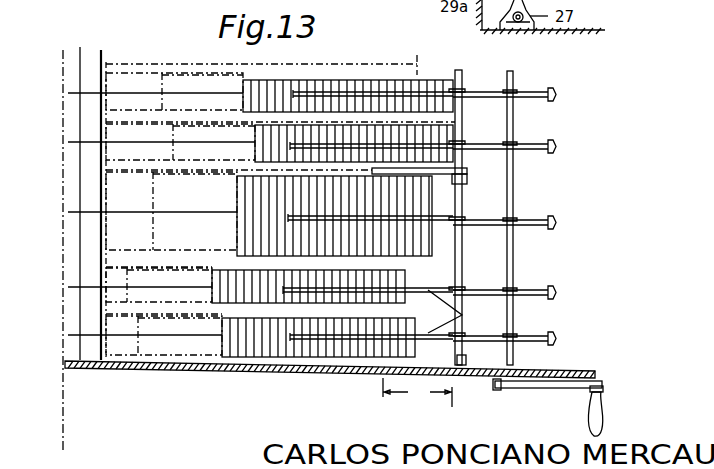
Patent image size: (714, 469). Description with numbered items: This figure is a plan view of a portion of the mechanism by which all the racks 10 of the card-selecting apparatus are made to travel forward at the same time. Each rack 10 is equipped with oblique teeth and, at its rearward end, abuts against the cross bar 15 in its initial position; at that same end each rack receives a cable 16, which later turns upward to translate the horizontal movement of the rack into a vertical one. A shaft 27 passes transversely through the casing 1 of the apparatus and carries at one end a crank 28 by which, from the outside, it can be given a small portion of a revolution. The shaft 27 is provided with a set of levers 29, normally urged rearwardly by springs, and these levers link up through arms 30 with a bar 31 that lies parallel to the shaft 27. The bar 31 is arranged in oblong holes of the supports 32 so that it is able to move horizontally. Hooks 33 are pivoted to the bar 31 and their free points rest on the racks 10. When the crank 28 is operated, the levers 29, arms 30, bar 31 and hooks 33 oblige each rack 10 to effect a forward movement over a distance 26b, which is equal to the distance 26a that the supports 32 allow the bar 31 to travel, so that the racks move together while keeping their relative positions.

The casing 1 is at (137, 366).
The rack 10 is at (419, 83).
The cross bar 15 is at (86, 247).
The cable 16 is at (93, 142).
The distance 26a is at (417, 392).
The distance 26b is at (243, 89).
The shaft 27 is at (513, 190).
The crank 28 is at (543, 389).
The lever 29 is at (527, 93).
The arm 30 is at (492, 147).
The bar 31 is at (462, 121).
The support 32 is at (460, 172).
The rack engaging hook 33 is at (420, 143).